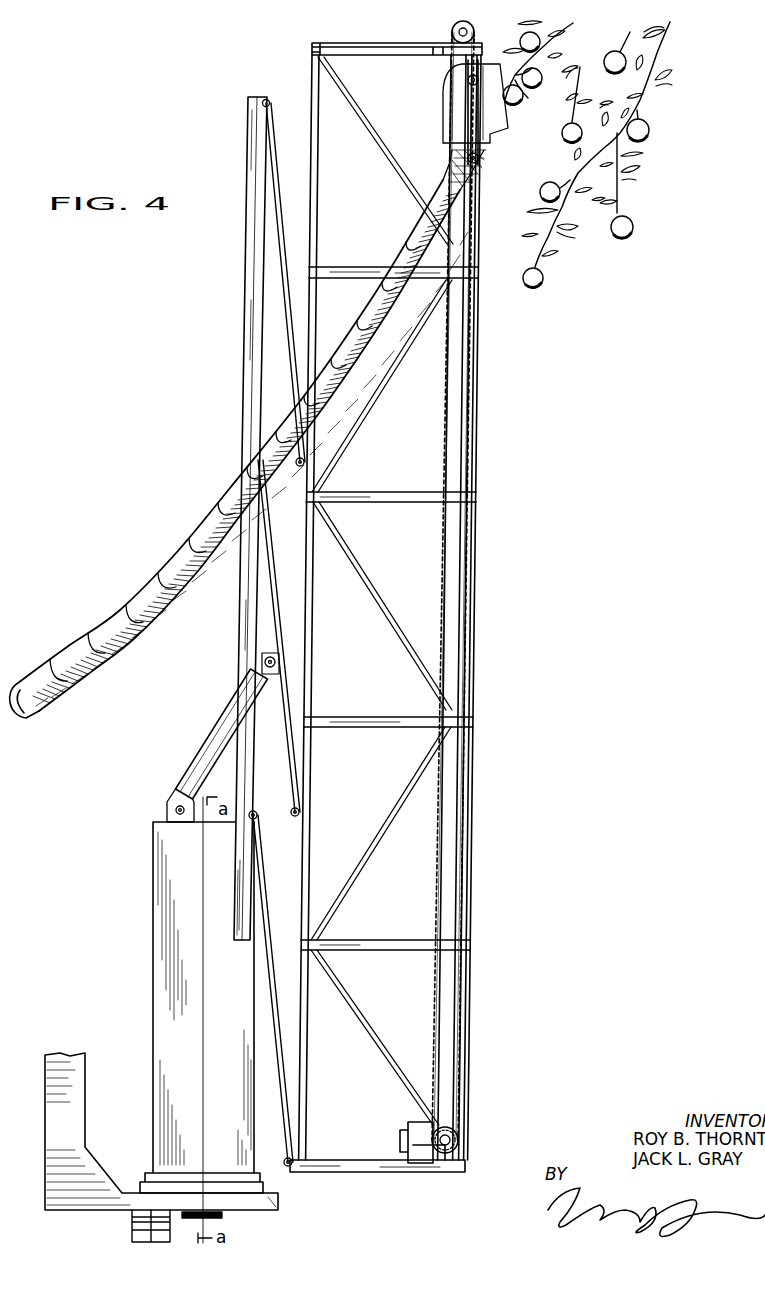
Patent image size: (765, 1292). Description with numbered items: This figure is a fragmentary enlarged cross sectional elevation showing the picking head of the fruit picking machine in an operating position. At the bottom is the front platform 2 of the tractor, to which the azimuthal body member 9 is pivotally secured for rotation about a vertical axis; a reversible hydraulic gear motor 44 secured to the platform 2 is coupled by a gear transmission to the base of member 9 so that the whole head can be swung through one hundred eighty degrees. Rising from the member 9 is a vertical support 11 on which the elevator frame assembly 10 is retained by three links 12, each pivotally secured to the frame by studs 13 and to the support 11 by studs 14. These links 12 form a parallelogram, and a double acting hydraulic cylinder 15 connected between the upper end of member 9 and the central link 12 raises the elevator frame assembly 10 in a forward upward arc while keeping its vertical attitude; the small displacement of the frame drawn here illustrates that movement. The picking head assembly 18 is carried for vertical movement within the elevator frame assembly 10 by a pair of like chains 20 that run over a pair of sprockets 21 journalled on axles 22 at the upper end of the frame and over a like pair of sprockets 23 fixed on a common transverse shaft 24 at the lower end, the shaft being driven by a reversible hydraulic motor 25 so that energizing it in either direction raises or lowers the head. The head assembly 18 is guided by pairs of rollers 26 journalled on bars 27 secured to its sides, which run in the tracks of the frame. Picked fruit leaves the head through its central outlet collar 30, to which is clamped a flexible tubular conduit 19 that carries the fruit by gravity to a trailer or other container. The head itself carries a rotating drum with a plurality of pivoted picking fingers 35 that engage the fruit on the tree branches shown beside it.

The front platform 2 is at (70, 1143).
The azimuthal body member 9 is at (178, 1023).
The elevator frame assembly 10 is at (476, 597).
The vertical support 11 is at (247, 316).
The links 12 is at (280, 196).
The studs 13 is at (298, 468).
The studs 14 is at (270, 101).
The hydraulic cylinder 15 is at (250, 708).
The picking head assembly 18 is at (518, 110).
The conduit 19 is at (200, 528).
The chains 20 is at (480, 356).
The sprockets 21 is at (452, 31).
The axles 22 is at (474, 31).
The sprockets 23 is at (456, 1136).
The transverse shaft 24 is at (451, 1143).
The reversible hydraulic motor 25 is at (408, 1140).
The rollers 26 is at (468, 79).
The bars 27 is at (468, 119).
The outlet collar 30 is at (484, 142).
The picking fingers 35 is at (528, 99).
The reversible hydraulic gear motor 44 is at (134, 1231).